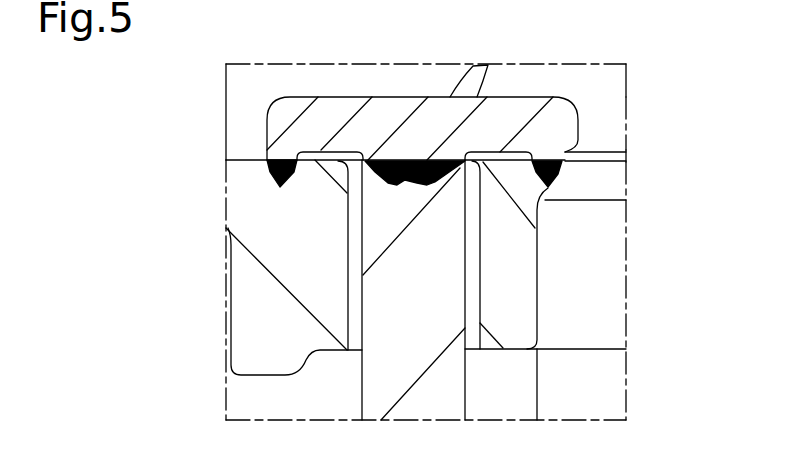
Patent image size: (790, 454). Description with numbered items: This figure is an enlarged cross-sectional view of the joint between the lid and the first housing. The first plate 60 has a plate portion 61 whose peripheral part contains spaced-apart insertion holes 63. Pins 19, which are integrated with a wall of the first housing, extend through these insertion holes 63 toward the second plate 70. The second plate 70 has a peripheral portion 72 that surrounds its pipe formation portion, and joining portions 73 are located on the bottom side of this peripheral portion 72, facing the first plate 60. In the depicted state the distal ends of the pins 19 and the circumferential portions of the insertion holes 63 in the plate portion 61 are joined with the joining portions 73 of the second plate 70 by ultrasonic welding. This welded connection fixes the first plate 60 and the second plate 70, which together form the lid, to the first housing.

The peripheral portion 72 is at (479, 112).
The second plate 70 is at (598, 97).
The plate portion 61 is at (601, 237).
The first plate 60 is at (612, 152).
The joining portions 73 is at (280, 187).
The pins 19 is at (362, 386).
The insertion holes 63 is at (480, 349).